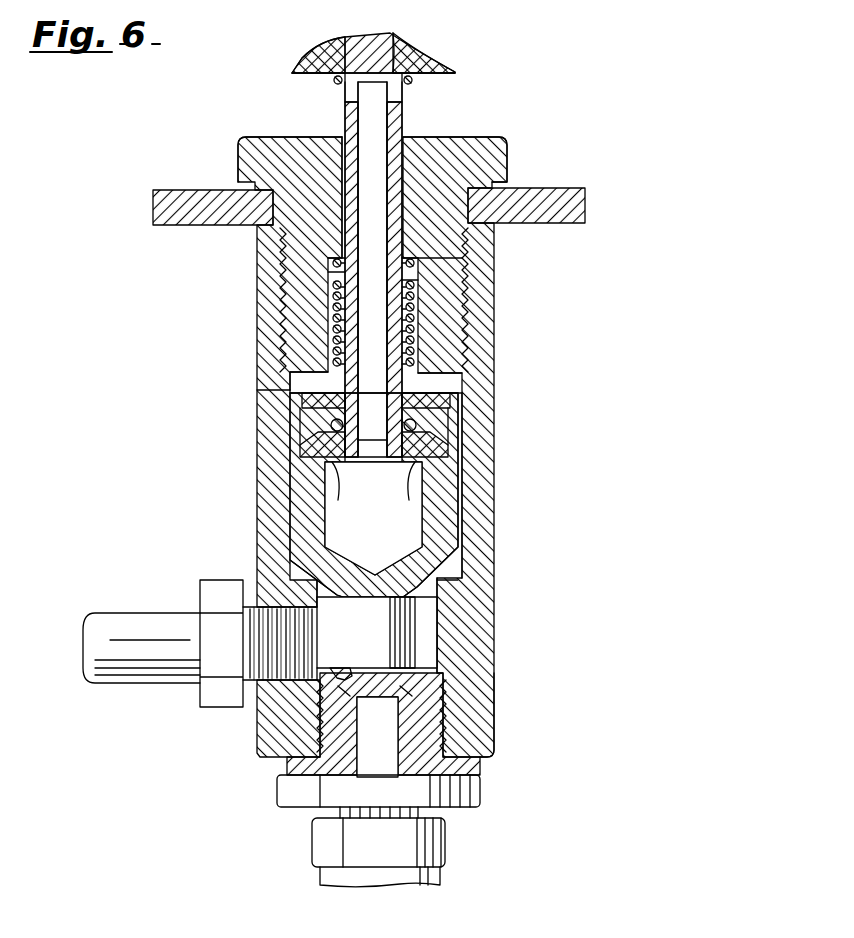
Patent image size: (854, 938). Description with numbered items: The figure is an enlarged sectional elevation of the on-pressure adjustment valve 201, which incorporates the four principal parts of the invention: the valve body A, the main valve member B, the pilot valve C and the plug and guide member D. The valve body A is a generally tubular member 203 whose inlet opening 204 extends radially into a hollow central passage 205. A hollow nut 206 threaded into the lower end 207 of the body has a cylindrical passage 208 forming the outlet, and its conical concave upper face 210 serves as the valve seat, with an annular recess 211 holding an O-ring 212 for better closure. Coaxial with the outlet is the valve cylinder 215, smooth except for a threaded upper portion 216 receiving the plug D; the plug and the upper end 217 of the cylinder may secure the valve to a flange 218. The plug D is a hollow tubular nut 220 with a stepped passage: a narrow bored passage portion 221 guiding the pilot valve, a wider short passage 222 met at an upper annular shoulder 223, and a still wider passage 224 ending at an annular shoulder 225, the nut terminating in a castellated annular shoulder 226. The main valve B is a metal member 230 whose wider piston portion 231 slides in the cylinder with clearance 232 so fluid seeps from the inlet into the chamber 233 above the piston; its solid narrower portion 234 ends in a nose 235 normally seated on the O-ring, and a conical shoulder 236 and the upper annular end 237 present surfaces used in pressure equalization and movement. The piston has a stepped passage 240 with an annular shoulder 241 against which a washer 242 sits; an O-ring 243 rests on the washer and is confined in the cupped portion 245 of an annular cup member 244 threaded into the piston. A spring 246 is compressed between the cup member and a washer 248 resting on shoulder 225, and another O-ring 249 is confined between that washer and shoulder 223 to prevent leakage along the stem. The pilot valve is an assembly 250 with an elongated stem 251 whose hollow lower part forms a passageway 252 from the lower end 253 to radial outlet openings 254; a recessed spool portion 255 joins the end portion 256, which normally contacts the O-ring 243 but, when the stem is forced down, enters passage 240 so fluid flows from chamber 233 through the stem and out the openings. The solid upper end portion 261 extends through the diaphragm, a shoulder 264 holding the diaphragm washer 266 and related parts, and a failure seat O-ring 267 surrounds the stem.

The on-pressure adjustment valve 201 is at (510, 715).
The tubular member 203 is at (495, 695).
The inlet opening 204 is at (253, 705).
The hollow central passage 205 is at (425, 630).
The hollow nut 206 is at (287, 790).
The lower end 207 is at (265, 745).
The cylindrical passage 208 is at (364, 769).
The conical concave upper face 210 is at (377, 737).
The annular recess 211 is at (352, 662).
The O-ring 212 is at (375, 681).
The valve cylinder 215 is at (465, 462).
The threaded upper portion 216 is at (279, 321).
The upper end 217 is at (262, 222).
The flange 218 is at (585, 206).
The hollow tubular nut 220 is at (482, 158).
The narrow smooth bored passage portion 221 is at (341, 150).
The wider short passage 222 is at (415, 264).
The upper annular shoulder 223 is at (412, 262).
The still wider passage 224 is at (333, 306).
The annular shoulder 225 is at (410, 283).
The castellated annular shoulder 226 is at (455, 371).
The metal member 230 is at (456, 565).
The piston portion 231 is at (445, 518).
The clearance 232 is at (463, 532).
The chamber 233 is at (450, 384).
The lower narrower diameter portion 234 is at (355, 641).
The nose 235 is at (420, 668).
The conical shoulder 236 is at (455, 583).
The upper annular end 237 is at (298, 390).
The stepped recess or passage 240 is at (325, 530).
The annular shoulder 241 is at (345, 509).
The washer 242 is at (395, 499).
The O-ring 243 is at (345, 427).
The annular cup member 244 is at (405, 419).
The cupped portion 245 is at (410, 405).
The spring 246 is at (463, 305).
The washer 248 is at (328, 274).
The O-ring 249 is at (333, 262).
The pilot valve assembly 250 is at (330, 356).
The elongated stem 251 is at (349, 296).
The passageway 252 is at (360, 216).
The lower end 253 is at (373, 481).
The radial outlet openings 254 is at (343, 97).
The recessed peripheral spool portion 255 is at (400, 353).
The end portion 256 is at (345, 412).
The solid upper end portion 261 is at (392, 36).
The shoulder 264 is at (335, 70).
The diaphragm washer 266 is at (420, 70).
The failure seat O-ring 267 is at (333, 80).
The valve body A is at (512, 745).
The main valve member B is at (462, 558).
The pilot valve C is at (415, 136).
The plug and guide member D is at (520, 168).